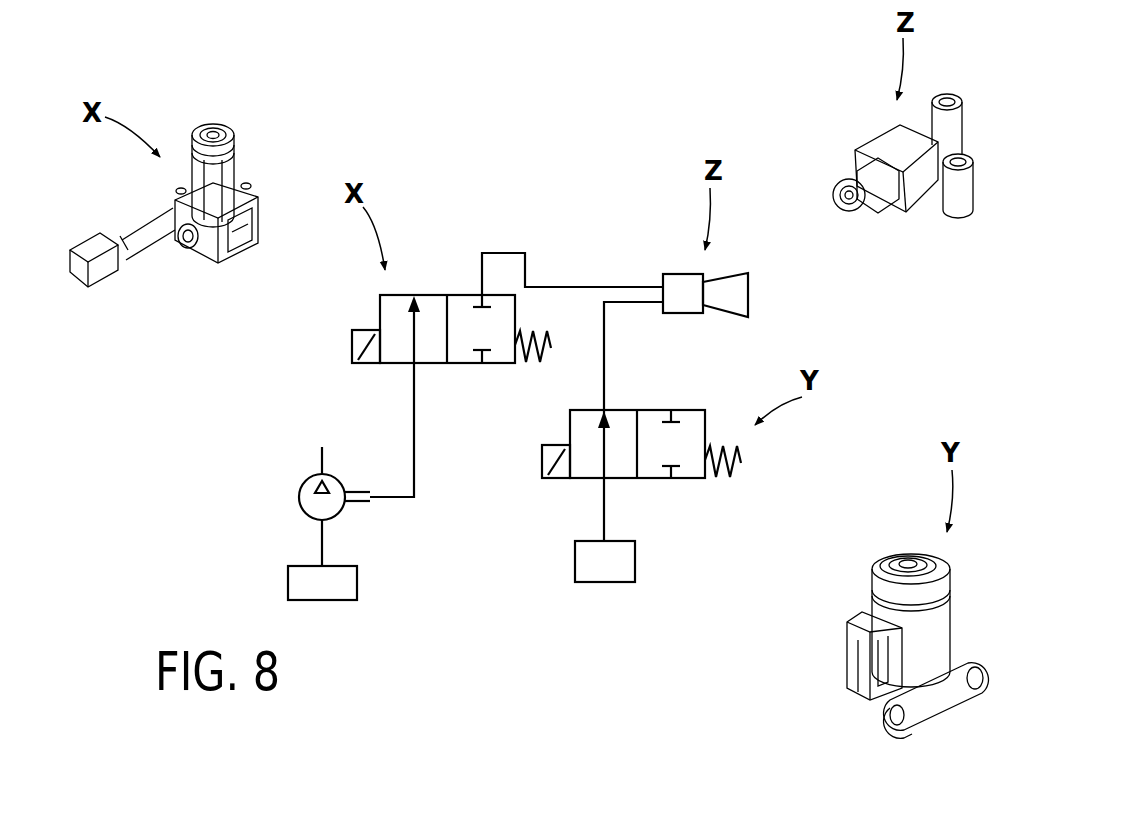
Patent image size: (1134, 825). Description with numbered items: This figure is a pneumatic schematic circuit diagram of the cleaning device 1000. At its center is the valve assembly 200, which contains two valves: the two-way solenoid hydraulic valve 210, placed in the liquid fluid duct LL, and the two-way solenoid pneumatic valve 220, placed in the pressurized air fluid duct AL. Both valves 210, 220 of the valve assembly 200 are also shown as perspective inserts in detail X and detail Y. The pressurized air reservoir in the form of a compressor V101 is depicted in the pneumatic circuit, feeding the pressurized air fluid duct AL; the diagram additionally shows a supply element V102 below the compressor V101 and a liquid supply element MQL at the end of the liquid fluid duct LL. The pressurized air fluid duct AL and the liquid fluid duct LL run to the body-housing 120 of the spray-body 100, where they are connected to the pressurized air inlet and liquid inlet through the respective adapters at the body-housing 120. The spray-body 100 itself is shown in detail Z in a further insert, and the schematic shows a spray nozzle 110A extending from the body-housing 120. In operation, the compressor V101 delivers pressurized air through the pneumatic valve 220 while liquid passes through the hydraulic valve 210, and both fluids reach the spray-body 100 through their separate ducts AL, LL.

The cleaning device 1000 is at (593, 155).
The spray-body 100 is at (672, 252).
The nozzle 110A is at (740, 295).
The body-housing 120 is at (703, 283).
The valve assembly 200 is at (182, 92).
The two-way solenoid hydraulic valve 210 is at (685, 482).
The two-way solenoid pneumatic valve 220 is at (423, 292).
The pressurized air fluid duct AL is at (505, 250).
The liquid fluid duct LL is at (603, 383).
The lubricant supply MQL is at (574, 560).
The compressor V101 is at (300, 503).
The air supply V102 is at (287, 588).